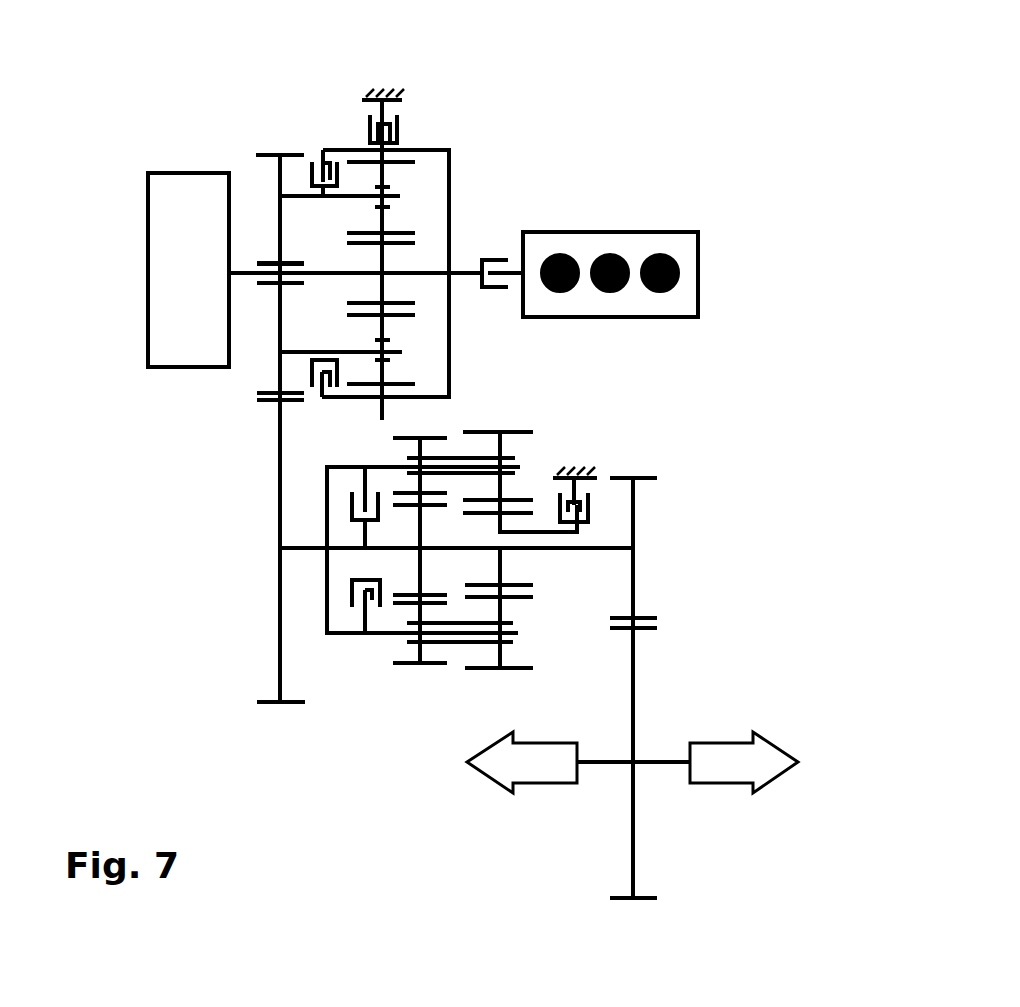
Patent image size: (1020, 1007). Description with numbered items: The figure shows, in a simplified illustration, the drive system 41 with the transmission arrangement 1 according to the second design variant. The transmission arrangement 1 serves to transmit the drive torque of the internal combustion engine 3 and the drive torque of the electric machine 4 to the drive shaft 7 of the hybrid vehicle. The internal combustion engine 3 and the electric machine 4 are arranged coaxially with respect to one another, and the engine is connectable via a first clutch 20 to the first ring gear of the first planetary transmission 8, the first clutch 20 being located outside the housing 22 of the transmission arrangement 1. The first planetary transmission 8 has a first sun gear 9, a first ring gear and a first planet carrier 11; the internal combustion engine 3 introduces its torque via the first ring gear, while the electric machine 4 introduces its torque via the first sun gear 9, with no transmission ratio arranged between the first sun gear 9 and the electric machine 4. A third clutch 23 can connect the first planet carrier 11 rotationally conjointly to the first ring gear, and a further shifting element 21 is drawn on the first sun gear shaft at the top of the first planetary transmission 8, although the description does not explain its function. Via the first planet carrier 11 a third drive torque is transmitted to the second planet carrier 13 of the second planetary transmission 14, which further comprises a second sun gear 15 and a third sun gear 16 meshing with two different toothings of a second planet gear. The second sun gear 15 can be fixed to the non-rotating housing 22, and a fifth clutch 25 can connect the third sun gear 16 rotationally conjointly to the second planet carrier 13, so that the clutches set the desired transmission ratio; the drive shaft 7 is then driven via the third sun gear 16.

The transmission arrangement 1 is at (610, 245).
The internal combustion engine 3 is at (648, 302).
The electric machine 4 is at (157, 333).
The drive shaft 7 is at (730, 757).
The first planetary transmission 8 is at (280, 128).
The first sun gear 9 is at (388, 270).
The first planet carrier 11 is at (277, 178).
The second planet carrier 13 is at (280, 500).
The second planetary transmission 14 is at (649, 458).
The second sun gear 15 is at (500, 575).
The third sun gear 16 is at (420, 572).
The first clutch 20 is at (490, 258).
The clutch 21 is at (400, 129).
The housing 22 is at (388, 95).
The third clutch 23 is at (318, 148).
The fifth clutch 25 is at (590, 512).
The drive system 41 is at (550, 150).